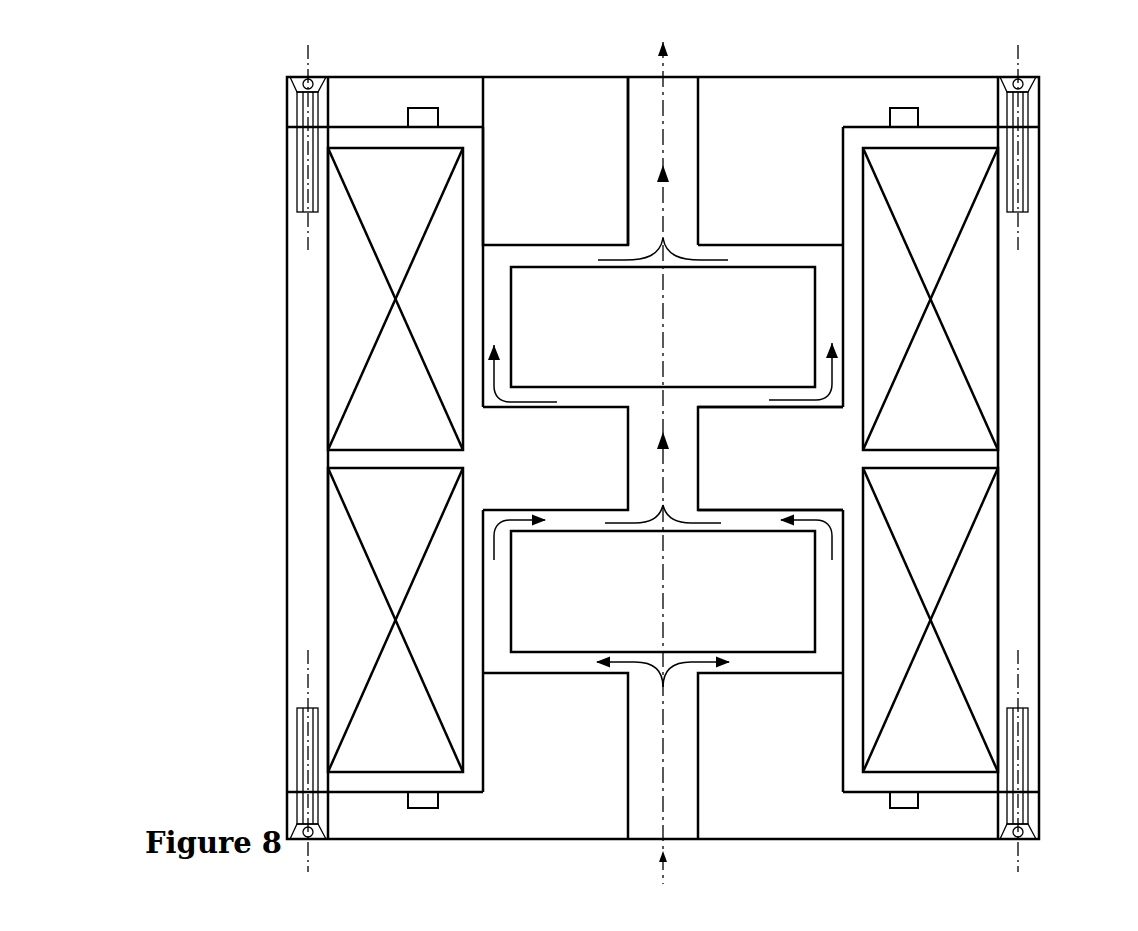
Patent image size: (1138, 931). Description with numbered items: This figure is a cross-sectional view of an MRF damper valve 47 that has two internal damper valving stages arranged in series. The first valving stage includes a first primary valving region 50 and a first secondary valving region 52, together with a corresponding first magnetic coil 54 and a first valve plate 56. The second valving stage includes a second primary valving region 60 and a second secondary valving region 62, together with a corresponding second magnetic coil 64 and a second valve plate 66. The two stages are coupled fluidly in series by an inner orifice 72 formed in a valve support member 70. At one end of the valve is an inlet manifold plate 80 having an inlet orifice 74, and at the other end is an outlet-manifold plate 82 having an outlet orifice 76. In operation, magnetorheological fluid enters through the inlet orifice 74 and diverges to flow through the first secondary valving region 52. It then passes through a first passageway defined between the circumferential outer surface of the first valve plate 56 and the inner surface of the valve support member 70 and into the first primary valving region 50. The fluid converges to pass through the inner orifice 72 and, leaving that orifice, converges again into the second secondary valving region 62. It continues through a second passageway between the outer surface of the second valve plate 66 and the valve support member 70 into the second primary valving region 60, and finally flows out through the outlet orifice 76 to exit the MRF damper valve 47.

The MRF damper valve 47 is at (476, 74).
The outlet-manifold plate 82 is at (568, 132).
The outlet orifice 76 is at (683, 143).
The second primary valving region 60 is at (530, 257).
The second valve plate 66 is at (573, 305).
The second secondary valving region 62 is at (573, 402).
The inner orifice 72 is at (640, 435).
The valve support member 70 is at (786, 465).
The first primary valving region 50 is at (500, 513).
The first valve plate 56 is at (537, 580).
The first secondary valving region 52 is at (540, 663).
The inlet orifice 74 is at (647, 758).
The inlet manifold plate 80 is at (766, 793).
The second magnetic coil 64 is at (968, 305).
The first magnetic coil 54 is at (968, 622).